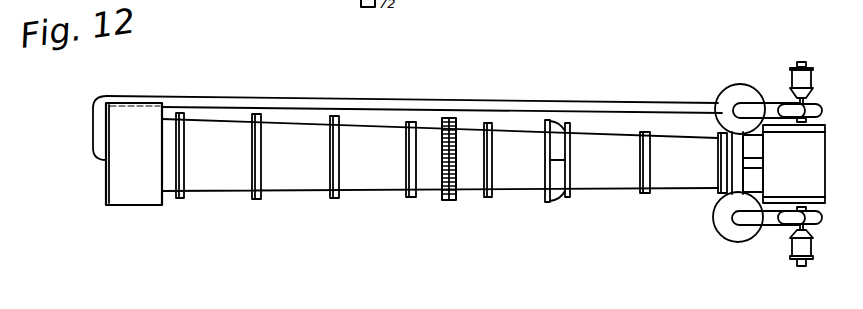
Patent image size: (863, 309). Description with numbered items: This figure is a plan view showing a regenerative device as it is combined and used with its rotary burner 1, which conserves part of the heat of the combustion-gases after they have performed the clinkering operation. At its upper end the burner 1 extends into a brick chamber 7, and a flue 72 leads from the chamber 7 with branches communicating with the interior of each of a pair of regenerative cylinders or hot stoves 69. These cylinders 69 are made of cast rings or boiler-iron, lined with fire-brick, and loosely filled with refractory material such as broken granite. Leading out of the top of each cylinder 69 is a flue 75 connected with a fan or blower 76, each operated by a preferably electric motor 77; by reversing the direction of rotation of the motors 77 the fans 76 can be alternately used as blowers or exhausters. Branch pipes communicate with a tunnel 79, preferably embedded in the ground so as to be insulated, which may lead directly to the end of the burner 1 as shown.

The rotary burner 1 is at (531, 167).
The brick chamber 7 is at (800, 164).
The regenerative cylinder 69 is at (737, 167).
The flue 72 is at (760, 166).
The flue 75 is at (769, 103).
The fan or blower 76 is at (812, 163).
The motor 77 is at (813, 164).
The tunnel 79 is at (407, 123).